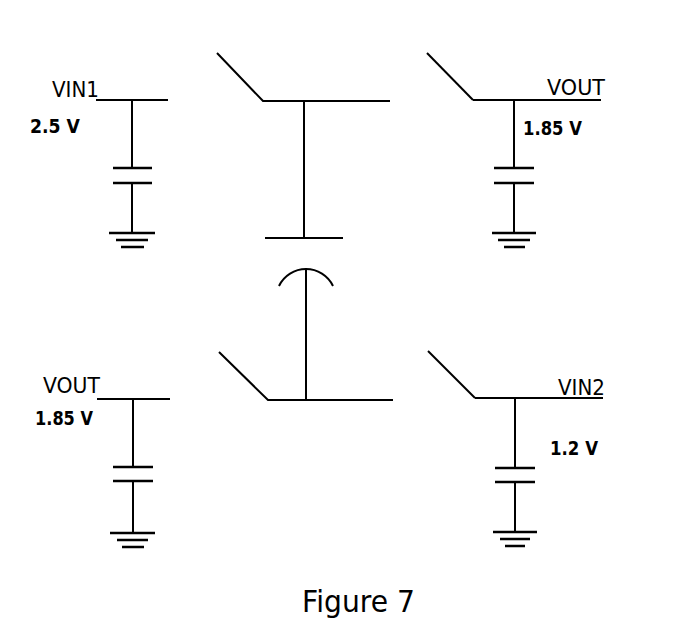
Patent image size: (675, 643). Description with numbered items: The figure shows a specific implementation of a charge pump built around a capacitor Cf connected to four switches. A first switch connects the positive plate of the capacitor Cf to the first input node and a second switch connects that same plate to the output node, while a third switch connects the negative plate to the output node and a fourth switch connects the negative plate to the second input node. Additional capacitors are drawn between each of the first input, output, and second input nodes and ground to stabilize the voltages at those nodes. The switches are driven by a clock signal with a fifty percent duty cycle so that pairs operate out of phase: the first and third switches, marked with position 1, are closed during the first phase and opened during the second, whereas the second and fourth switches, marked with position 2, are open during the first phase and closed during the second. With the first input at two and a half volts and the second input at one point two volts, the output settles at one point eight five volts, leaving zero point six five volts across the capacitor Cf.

The switch position 1 is at (278, 229).
The switch position 2 is at (455, 244).
The capacitor Cf is at (334, 250).